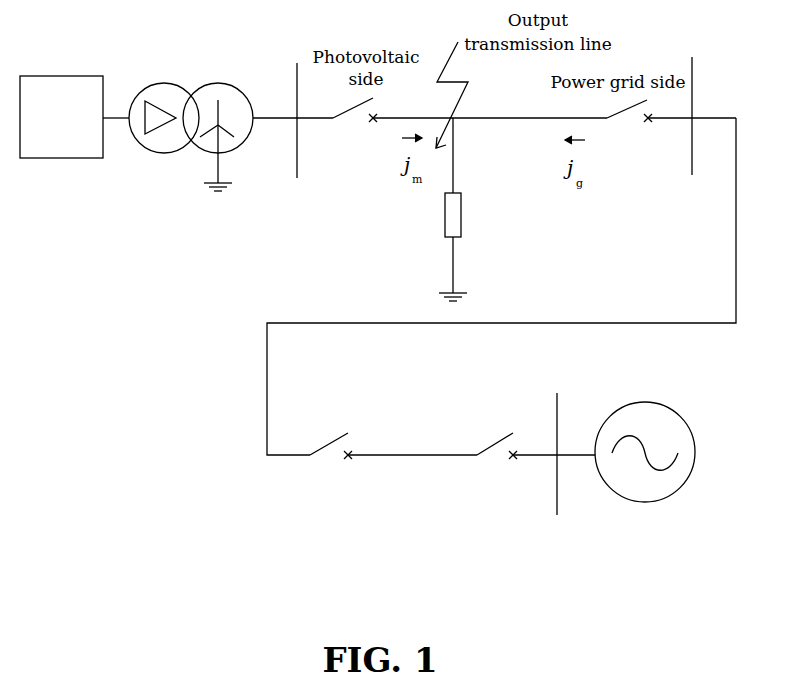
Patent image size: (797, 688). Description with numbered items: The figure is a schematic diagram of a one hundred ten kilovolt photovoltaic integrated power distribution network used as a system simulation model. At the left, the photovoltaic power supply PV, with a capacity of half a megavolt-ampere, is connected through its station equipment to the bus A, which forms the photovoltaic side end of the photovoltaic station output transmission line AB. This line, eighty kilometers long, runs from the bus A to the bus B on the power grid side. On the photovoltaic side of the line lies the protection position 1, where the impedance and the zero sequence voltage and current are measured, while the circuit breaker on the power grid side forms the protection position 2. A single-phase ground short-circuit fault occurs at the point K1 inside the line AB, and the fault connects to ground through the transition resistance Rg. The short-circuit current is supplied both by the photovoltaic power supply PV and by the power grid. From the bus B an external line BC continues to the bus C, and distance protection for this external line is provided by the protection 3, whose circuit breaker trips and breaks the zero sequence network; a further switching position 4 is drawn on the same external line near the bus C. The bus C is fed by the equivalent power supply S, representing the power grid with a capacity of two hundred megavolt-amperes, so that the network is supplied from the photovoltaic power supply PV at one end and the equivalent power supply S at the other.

The photovoltaic power supply PV is at (74, 117).
The bus A is at (300, 96).
The bus B is at (697, 94).
The bus C is at (557, 433).
The protection position 1 is at (393, 133).
The protection position 2 is at (671, 136).
The protection 3 is at (393, 466).
The switch 4 is at (536, 468).
The fault point K1 is at (482, 155).
The transition resistance Rg is at (473, 247).
The equivalent power supply S is at (645, 478).